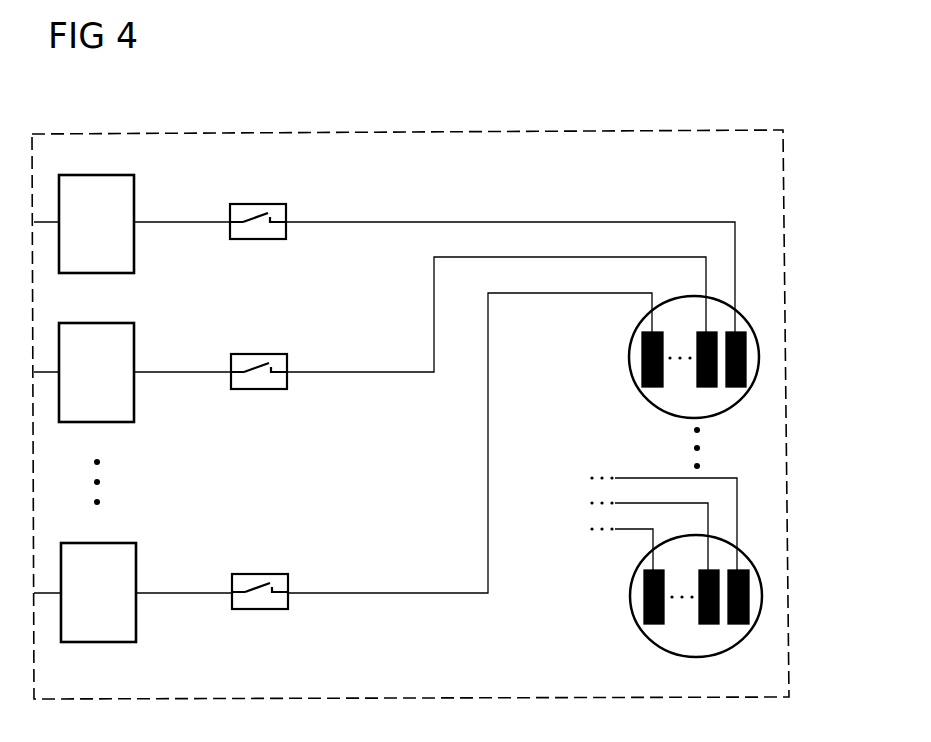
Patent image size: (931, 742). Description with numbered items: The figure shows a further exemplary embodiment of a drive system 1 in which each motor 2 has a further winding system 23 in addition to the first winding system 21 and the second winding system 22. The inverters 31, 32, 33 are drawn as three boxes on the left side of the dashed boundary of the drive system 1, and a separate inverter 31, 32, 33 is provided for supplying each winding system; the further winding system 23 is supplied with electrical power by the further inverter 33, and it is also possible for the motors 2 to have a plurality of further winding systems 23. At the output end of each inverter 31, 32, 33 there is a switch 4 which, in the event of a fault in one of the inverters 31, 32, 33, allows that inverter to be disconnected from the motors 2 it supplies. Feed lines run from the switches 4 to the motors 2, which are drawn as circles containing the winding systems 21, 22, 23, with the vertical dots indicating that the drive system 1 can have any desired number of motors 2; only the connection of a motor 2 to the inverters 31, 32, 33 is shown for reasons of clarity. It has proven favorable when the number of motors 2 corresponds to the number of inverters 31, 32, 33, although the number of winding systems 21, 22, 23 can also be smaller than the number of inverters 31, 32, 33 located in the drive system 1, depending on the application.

The drive system 1 is at (567, 132).
The motor 2 is at (750, 323).
The first winding system 21 is at (746, 353).
The second winding system 22 is at (707, 387).
The further winding system 23 is at (642, 358).
The inverter 31 is at (135, 200).
The inverter 32 is at (135, 348).
The further inverter 33 is at (137, 568).
The switch 4 is at (247, 204).